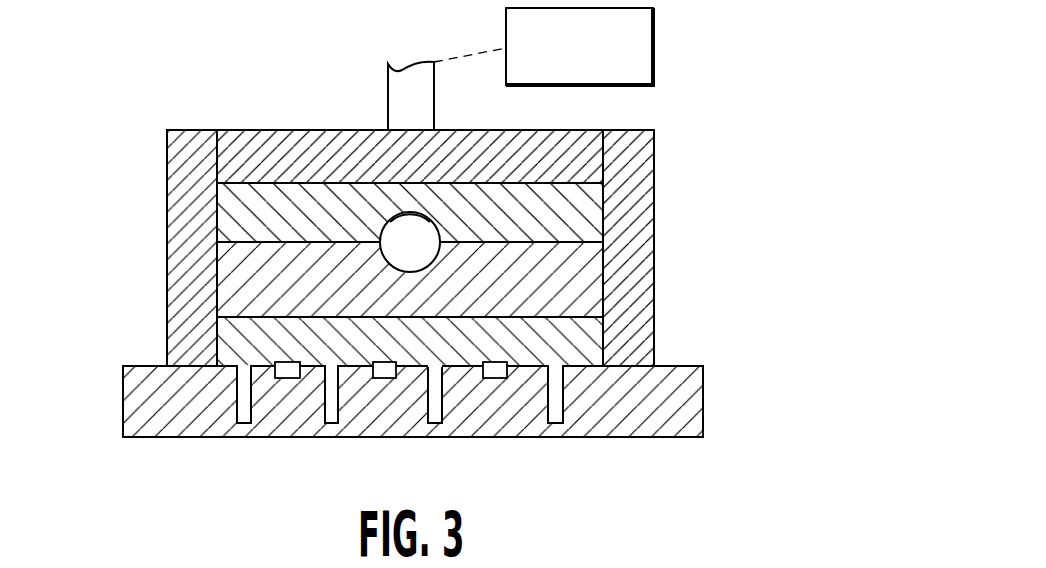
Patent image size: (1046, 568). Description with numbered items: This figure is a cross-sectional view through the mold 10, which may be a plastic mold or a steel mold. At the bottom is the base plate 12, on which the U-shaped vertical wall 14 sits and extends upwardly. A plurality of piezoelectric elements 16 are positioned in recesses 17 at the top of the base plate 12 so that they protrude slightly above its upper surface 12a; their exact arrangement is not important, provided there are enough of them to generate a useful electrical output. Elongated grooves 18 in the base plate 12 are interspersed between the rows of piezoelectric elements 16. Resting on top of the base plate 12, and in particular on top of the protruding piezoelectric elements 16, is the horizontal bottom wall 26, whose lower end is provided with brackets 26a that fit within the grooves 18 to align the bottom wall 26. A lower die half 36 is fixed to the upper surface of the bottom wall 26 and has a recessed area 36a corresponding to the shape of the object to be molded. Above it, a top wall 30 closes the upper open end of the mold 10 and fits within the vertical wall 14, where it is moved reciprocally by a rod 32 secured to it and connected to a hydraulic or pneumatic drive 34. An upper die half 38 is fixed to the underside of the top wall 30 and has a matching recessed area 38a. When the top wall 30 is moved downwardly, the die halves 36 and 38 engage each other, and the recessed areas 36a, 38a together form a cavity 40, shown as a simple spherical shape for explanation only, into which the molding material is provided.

The mold 10 is at (400, 254).
The base plate 12 is at (403, 373).
The upper surface 12a is at (712, 340).
The U-shaped vertical wall 14 is at (178, 194).
The piezoelectric elements 16 is at (380, 378).
The recesses 17 is at (243, 415).
The elongated grooves 18 is at (282, 378).
The bottom wall 26 is at (590, 333).
The brackets 26a is at (438, 418).
The top wall 30 is at (252, 140).
The rod 32 is at (395, 83).
The hydraulic or pneumatic drive 34 is at (705, 27).
The lower die half 36 is at (230, 282).
The recessed area 36a is at (462, 468).
The upper die half 38 is at (585, 218).
The recessed area 38a is at (425, 222).
The cavity 40 is at (397, 229).